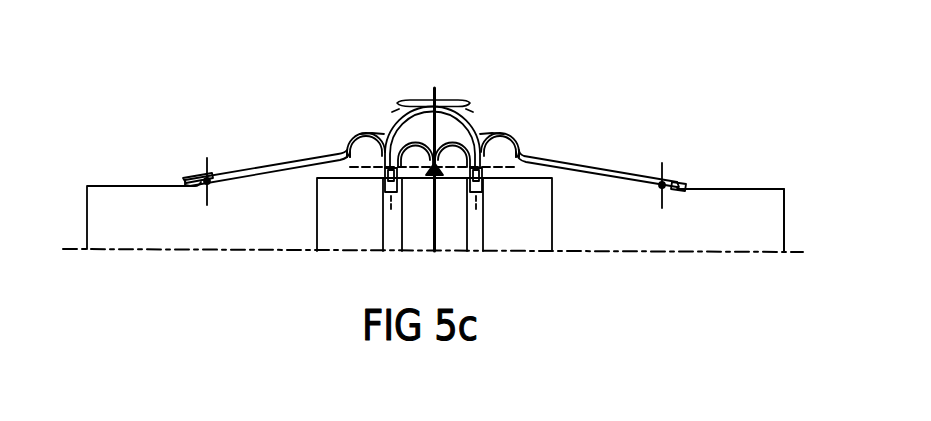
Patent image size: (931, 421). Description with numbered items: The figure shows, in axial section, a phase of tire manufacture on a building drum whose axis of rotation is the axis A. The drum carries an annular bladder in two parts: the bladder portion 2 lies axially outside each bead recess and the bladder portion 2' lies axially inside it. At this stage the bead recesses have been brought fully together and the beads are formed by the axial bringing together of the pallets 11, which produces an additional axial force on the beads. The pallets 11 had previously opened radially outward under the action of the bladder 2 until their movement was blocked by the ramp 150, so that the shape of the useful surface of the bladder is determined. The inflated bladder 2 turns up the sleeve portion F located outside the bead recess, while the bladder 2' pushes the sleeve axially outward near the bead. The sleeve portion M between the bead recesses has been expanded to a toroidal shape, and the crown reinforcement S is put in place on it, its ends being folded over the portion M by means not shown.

The pallet 11 is at (238, 168).
The bladder portion 2 is at (432, 115).
The bladder portion 2' is at (433, 169).
The ramp 150 is at (757, 189).
The portion of the sleeve F is at (371, 132).
The portion of the sleeve M is at (396, 110).
The crown reinforcement S is at (434, 99).
The axis of rotation A is at (428, 255).